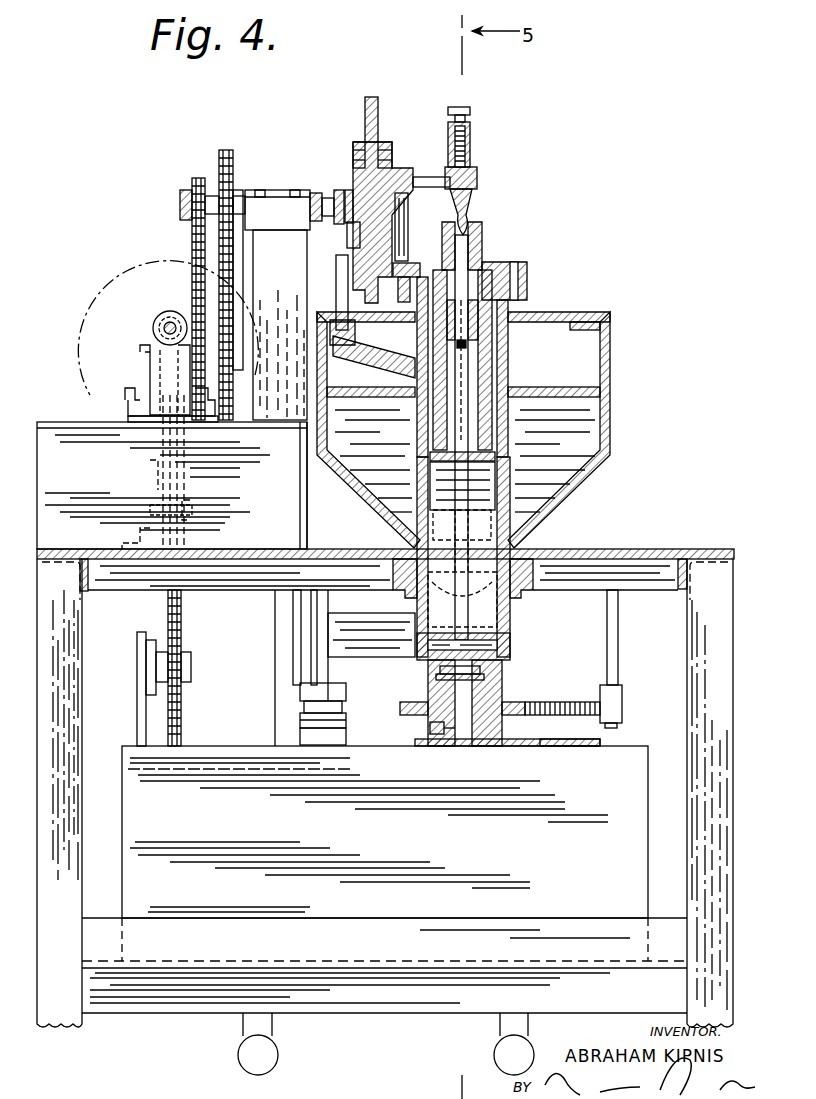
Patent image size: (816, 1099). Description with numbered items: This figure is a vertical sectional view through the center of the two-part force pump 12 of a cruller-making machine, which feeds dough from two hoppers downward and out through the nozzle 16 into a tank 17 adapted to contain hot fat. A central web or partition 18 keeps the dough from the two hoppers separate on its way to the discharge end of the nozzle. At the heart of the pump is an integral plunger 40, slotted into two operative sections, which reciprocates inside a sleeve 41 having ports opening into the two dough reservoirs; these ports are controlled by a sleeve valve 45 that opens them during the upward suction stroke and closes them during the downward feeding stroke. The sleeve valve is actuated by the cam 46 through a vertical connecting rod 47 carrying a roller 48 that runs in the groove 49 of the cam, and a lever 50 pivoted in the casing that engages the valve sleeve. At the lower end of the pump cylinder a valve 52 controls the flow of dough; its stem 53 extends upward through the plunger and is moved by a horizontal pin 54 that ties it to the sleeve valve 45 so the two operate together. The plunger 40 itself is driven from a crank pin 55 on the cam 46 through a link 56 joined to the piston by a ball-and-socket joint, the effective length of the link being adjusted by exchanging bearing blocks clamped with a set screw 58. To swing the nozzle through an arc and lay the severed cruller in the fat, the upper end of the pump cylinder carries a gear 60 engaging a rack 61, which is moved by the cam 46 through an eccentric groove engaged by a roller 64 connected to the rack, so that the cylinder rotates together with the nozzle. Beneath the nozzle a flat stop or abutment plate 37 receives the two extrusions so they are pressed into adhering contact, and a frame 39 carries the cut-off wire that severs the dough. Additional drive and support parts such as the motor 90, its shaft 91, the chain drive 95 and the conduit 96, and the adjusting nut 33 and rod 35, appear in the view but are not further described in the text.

The two-part force pump 12 is at (497, 238).
The nozzle 16 is at (365, 600).
The tank 17 is at (385, 853).
The central web or partition 18 is at (520, 521).
The adjusting nut 33 is at (340, 688).
The adjusting rod 35 is at (622, 711).
The stop or abutment plate 37 is at (384, 746).
The frame 39 is at (581, 747).
The plunger 40 is at (496, 450).
The sleeve 41 is at (496, 410).
The sleeve valve 45 is at (509, 478).
The cam 46 is at (371, 95).
The vertical connecting rod 47 is at (336, 278).
The roller 48 is at (346, 234).
The groove 49 is at (353, 153).
The lever 50 is at (368, 358).
The valve 52 is at (512, 624).
The stem 53 is at (478, 302).
The horizontal pin 54 is at (476, 354).
The crank pin 55 is at (426, 176).
The link 56 is at (468, 212).
The set screw 58 is at (470, 110).
The gear 60 is at (518, 266).
The rack 61 is at (412, 276).
The roller 64 is at (410, 192).
The motor 90 is at (82, 296).
The motor shaft 91 is at (175, 388).
The chain drive 95 is at (187, 216).
The conduit 96 is at (153, 480).